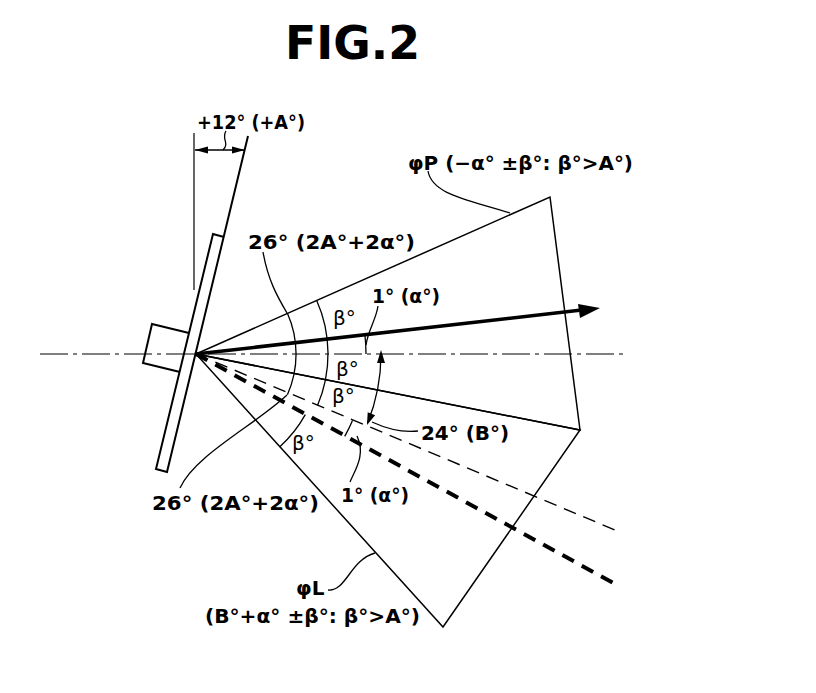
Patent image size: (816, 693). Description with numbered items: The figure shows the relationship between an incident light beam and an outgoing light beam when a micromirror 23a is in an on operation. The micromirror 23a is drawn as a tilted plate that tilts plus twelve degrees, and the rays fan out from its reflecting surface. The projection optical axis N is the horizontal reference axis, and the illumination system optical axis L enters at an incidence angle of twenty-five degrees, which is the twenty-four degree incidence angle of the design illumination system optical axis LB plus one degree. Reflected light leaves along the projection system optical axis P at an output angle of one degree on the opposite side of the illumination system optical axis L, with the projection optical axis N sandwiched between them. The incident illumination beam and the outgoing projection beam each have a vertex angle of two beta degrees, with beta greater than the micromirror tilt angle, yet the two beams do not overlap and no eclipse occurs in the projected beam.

The micromirror 23a is at (158, 455).
The projection system optical axis P is at (577, 309).
The projection optical axis N is at (342, 358).
The illumination system optical axis L is at (549, 550).
The design illumination system optical axis LB is at (576, 515).